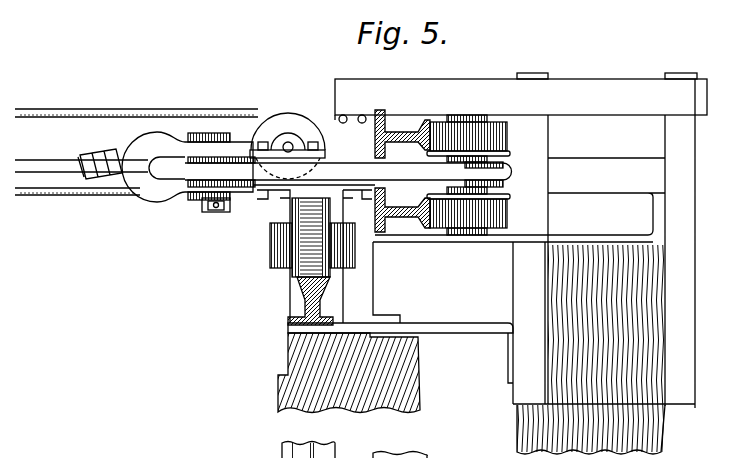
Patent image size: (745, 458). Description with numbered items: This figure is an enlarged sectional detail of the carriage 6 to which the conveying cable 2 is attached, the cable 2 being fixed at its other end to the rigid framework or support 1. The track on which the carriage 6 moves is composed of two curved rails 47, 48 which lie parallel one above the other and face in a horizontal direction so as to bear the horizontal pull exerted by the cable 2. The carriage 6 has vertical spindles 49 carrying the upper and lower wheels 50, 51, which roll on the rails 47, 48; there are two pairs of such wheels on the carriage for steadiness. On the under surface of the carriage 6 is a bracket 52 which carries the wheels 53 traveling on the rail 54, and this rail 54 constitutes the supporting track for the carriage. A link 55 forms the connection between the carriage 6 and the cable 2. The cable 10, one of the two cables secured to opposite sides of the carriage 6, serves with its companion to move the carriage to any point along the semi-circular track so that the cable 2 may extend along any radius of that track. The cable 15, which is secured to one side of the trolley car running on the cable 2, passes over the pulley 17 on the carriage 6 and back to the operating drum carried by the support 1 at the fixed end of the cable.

The support 1 is at (35, 213).
The cable 2 is at (36, 165).
The movable carriage 6 is at (345, 163).
The cable 10 is at (256, 456).
The cable 15 is at (149, 109).
The pulley 17 is at (293, 103).
The curved rail 47 is at (393, 132).
The curved rail 48 is at (406, 219).
The vertical spindles 49 is at (506, 158).
The upper wheel 50 is at (503, 126).
The lower wheel 51 is at (503, 216).
The bracket 52 is at (282, 203).
The wheels 53 is at (300, 268).
The rail 54 is at (328, 293).
The link 55 is at (153, 190).